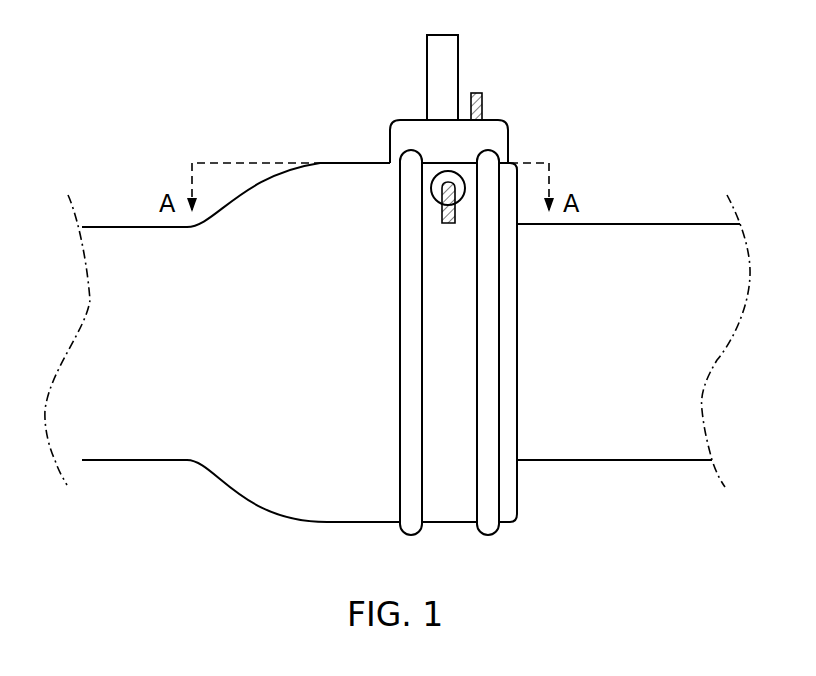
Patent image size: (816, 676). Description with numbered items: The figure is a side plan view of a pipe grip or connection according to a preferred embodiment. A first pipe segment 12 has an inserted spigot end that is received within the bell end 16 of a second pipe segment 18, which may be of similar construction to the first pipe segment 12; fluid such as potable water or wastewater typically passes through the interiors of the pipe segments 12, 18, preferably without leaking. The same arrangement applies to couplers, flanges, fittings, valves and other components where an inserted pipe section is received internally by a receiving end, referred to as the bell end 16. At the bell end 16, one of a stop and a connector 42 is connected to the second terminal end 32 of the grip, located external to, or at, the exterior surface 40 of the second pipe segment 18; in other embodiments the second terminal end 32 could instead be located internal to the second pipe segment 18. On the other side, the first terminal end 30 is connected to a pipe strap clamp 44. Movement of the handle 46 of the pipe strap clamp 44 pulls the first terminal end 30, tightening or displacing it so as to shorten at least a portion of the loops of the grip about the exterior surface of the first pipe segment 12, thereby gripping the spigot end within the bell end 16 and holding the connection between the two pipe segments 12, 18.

The first pipe segment 12 is at (687, 450).
The bell end 16 is at (509, 345).
The second pipe segment 18 is at (268, 497).
The first terminal end 30 is at (482, 113).
The second terminal end 32 is at (450, 226).
The exterior surface 40 is at (467, 373).
The connector 42 is at (428, 206).
The pipe strap clamp 44 is at (380, 104).
The handle 46 is at (445, 62).